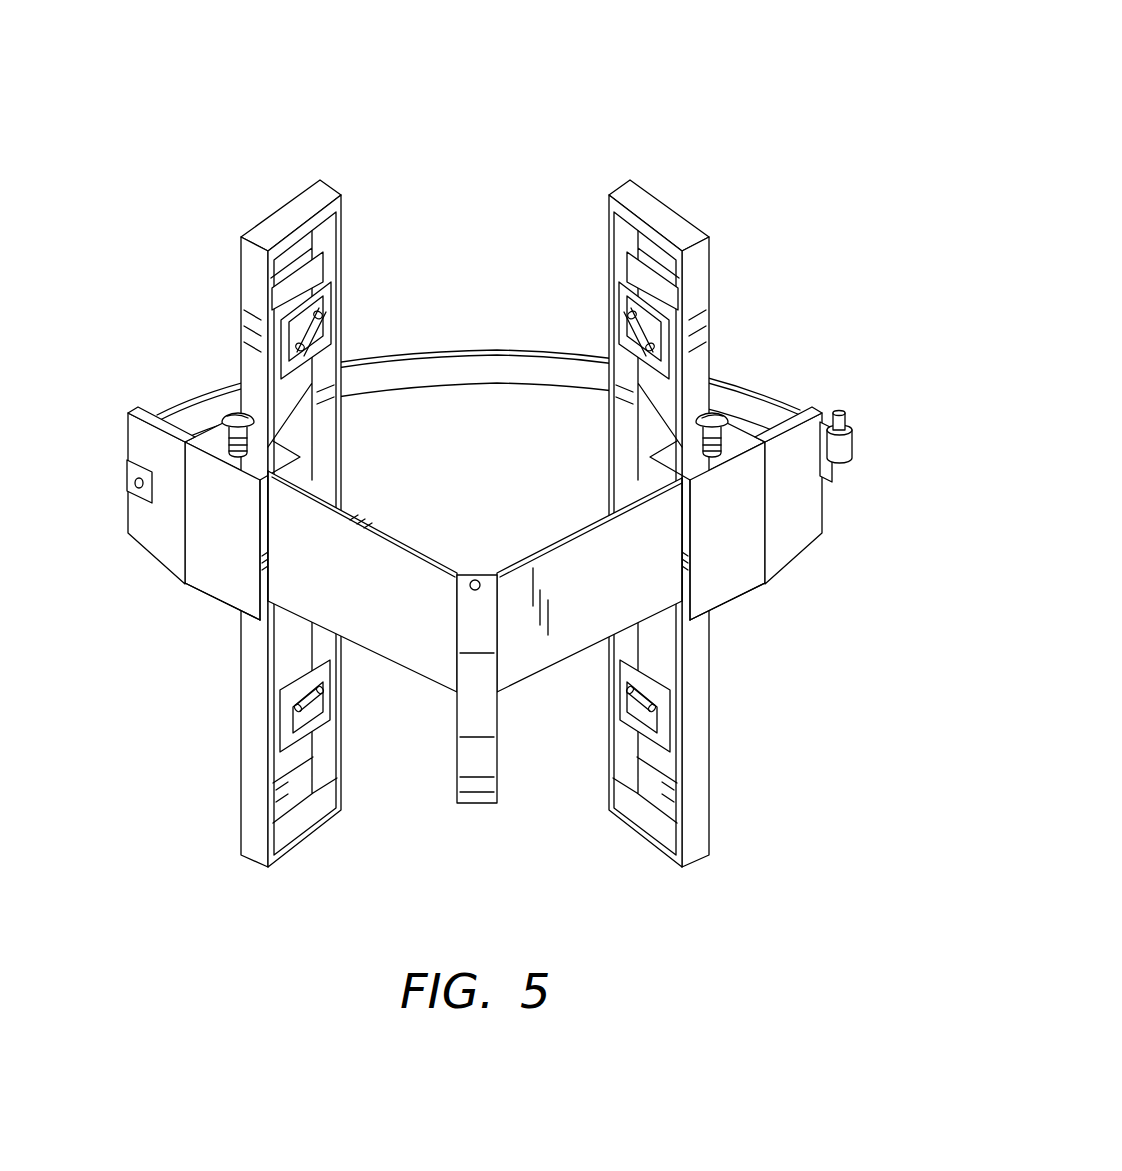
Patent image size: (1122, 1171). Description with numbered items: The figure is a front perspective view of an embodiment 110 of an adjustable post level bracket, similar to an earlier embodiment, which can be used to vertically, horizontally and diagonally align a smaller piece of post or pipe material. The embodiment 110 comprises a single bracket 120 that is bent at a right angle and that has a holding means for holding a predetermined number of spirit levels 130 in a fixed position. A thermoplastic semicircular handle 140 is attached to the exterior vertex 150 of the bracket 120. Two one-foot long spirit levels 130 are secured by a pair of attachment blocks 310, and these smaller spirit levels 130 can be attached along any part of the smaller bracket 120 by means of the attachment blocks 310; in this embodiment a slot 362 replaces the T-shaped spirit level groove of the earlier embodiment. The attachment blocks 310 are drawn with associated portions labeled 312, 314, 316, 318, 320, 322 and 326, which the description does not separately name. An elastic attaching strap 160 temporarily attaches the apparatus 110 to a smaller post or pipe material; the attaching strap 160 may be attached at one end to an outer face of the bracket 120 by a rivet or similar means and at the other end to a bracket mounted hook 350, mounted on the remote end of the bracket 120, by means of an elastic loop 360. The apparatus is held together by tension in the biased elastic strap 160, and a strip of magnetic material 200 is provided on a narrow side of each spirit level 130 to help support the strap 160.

The adjustable post level bracket embodiment 110 is at (768, 142).
The bracket 120 is at (418, 619).
The spirit level 130 is at (243, 262).
The semicircular handle 140 is at (478, 805).
The exterior vertex 150 is at (472, 563).
The attaching strap 160 is at (550, 370).
The strip of magnetic material 200 is at (342, 222).
The attachment block 310 is at (250, 547).
The front face of clamp block 312 is at (220, 562).
The top surface of clamp block 314 is at (203, 440).
The bottom surface of clamp block 316 is at (197, 592).
The side plate 318 is at (195, 515).
The post opening 320 is at (297, 482).
The trough end 322 is at (270, 518).
The set screw 326 is at (222, 415).
The bracket mounted hook 350 is at (828, 470).
The elastic loop 360 is at (850, 443).
The slot 362 is at (318, 448).